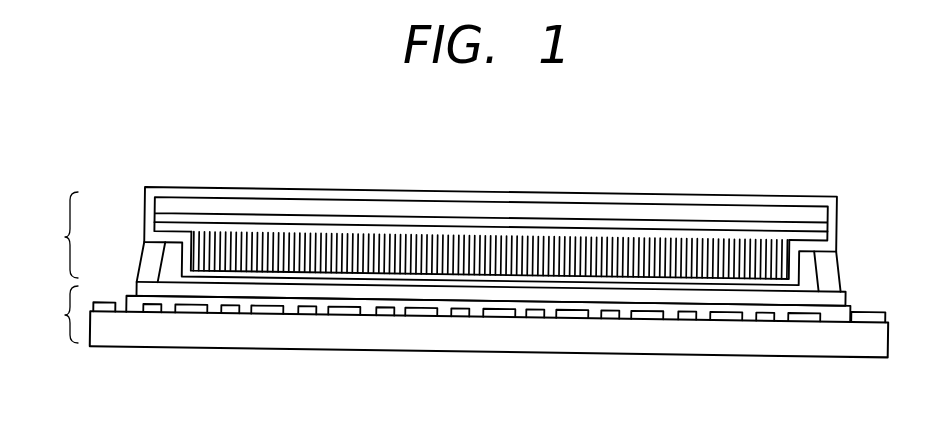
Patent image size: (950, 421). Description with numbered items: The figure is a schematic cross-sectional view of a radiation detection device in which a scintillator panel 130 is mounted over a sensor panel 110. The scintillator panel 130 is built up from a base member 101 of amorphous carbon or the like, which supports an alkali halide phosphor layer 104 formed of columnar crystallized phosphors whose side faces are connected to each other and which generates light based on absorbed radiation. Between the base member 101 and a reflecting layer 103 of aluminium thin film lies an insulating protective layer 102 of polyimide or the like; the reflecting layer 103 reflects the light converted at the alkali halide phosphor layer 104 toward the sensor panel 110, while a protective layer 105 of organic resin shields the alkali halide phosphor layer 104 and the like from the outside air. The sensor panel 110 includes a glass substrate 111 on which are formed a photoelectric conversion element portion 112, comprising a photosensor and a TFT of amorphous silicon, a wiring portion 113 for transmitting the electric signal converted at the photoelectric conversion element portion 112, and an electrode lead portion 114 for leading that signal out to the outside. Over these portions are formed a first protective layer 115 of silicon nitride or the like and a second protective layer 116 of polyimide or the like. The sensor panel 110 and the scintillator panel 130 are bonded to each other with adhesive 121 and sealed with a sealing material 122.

The base member 101 is at (738, 213).
The insulating protective layer 102 is at (620, 218).
The reflecting layer 103 is at (488, 228).
The alkali halide phosphor layer 104 is at (370, 248).
The protective layer 105 is at (242, 270).
The sensor panel 110 is at (53, 314).
The glass substrate 111 is at (255, 337).
The photoelectric conversion element portion 112 is at (347, 312).
The wiring portion 113 is at (388, 311).
The electrode lead portion 114 is at (115, 302).
The first protective layer 115 is at (522, 310).
The second protective layer 116 is at (633, 294).
The adhesive 121 is at (173, 270).
The sealing material 122 is at (832, 268).
The scintillator panel 130 is at (53, 235).